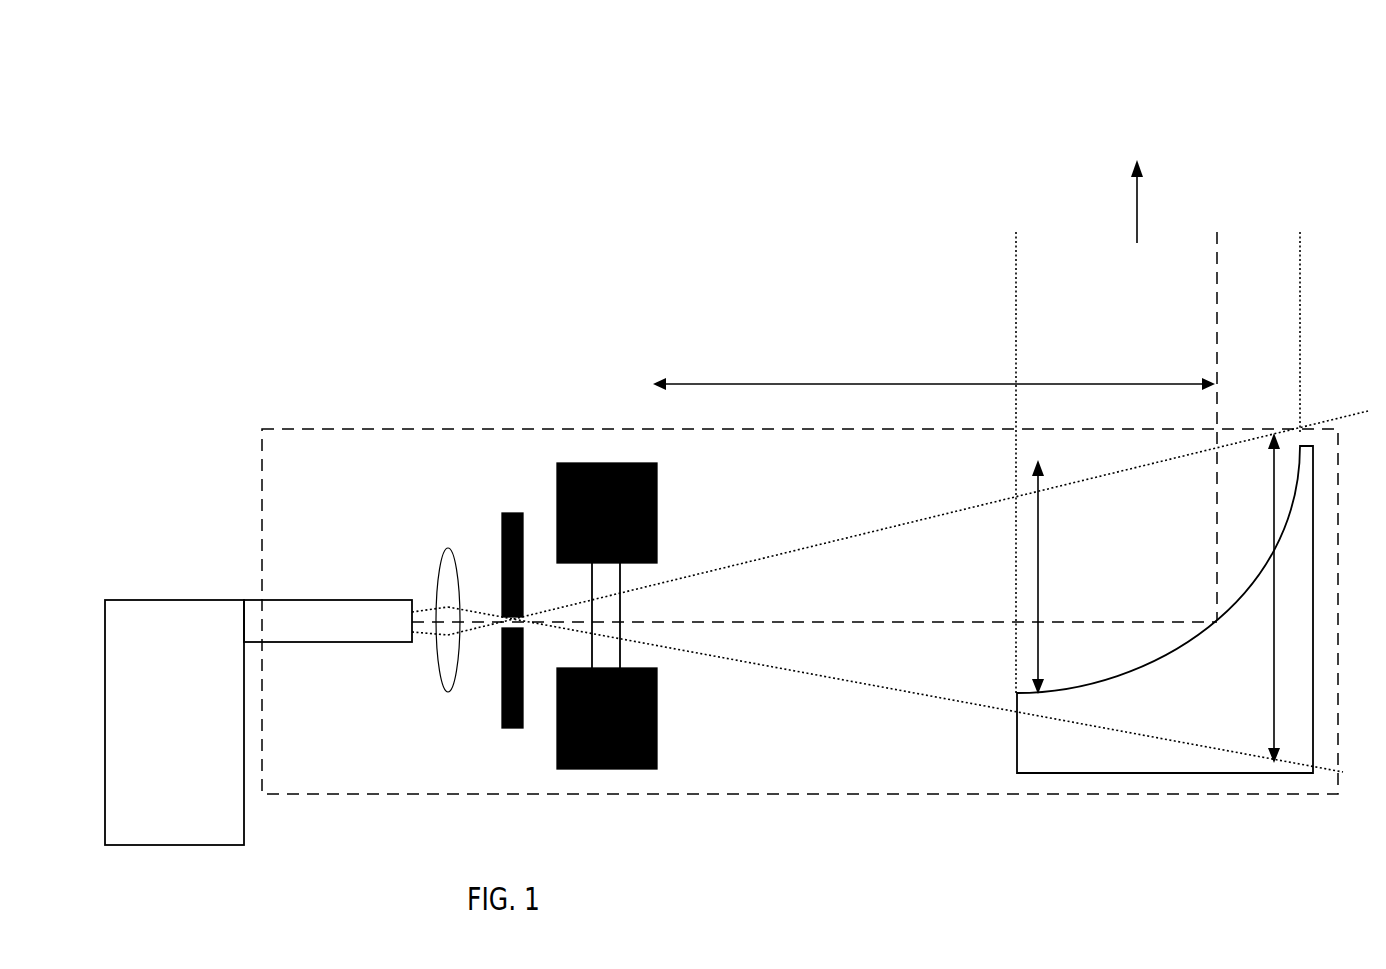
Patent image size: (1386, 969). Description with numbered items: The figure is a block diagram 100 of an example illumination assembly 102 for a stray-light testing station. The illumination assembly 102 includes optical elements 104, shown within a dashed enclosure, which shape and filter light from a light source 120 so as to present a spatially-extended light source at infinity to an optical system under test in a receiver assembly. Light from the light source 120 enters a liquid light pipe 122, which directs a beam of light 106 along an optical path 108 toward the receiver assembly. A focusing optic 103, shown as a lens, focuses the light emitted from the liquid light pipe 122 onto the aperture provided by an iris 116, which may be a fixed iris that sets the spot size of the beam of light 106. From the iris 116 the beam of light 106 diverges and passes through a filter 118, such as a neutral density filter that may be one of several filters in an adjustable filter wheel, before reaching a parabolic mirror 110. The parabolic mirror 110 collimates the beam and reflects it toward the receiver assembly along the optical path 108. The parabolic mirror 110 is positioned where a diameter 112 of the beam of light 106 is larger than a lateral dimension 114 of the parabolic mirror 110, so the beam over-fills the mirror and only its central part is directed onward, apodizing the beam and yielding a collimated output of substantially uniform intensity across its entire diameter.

The block diagram 100 is at (205, 58).
The illumination assembly 102 is at (570, 230).
The focusing optic 103 is at (445, 548).
The optical elements 104 is at (869, 793).
The beam of light 106 is at (835, 542).
The optical path 108 is at (1218, 309).
The parabolic mirror 110 is at (1147, 765).
The diameter 112 is at (1258, 598).
The lateral dimension 114 is at (1054, 577).
The iris 116 is at (506, 513).
The filter 118 is at (590, 465).
The light source 120 is at (191, 748).
The liquid light pipe 122 is at (366, 600).